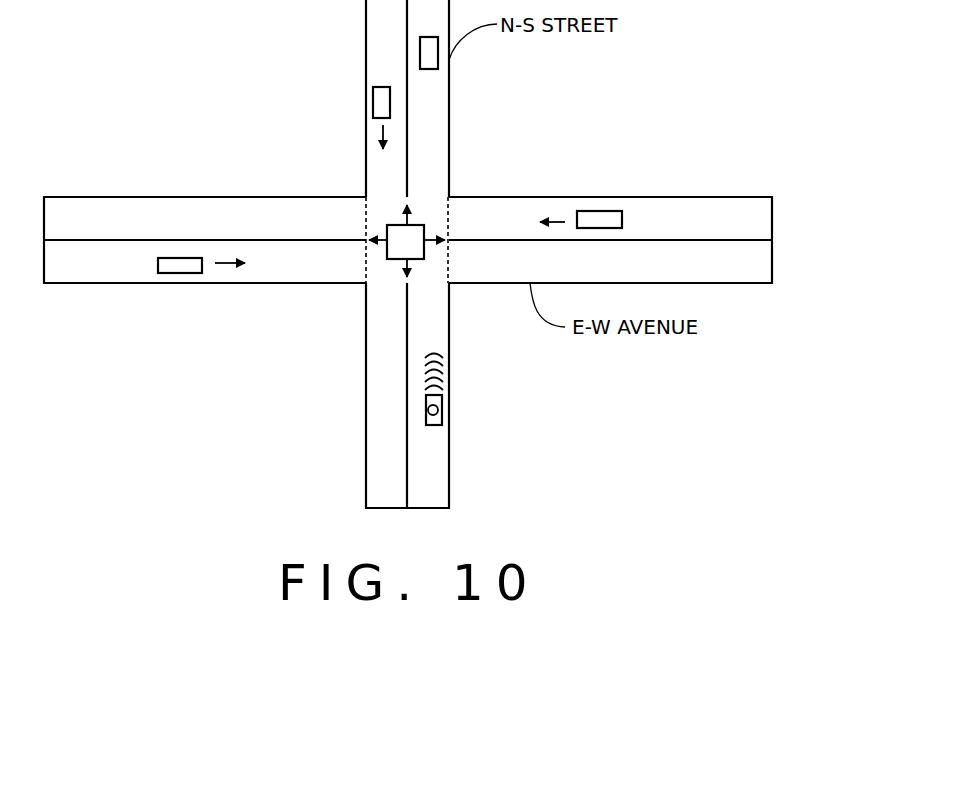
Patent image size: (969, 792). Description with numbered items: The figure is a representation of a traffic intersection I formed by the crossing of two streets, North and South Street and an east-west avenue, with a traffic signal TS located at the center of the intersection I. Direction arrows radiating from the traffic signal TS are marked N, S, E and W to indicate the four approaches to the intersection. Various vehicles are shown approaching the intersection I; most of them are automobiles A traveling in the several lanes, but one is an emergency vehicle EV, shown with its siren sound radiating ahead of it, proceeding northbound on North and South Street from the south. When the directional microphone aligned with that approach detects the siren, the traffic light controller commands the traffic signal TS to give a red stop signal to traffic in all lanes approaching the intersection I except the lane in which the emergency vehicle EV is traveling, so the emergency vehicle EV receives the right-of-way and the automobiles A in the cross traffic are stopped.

The automobiles A is at (373, 104).
The intersection I is at (451, 194).
The traffic signal TS is at (388, 259).
The emergency vehicle EV is at (443, 410).
The north direction arrow N is at (417, 211).
The south direction arrow S is at (416, 272).
The east direction arrow E is at (446, 228).
The west direction arrow W is at (368, 228).